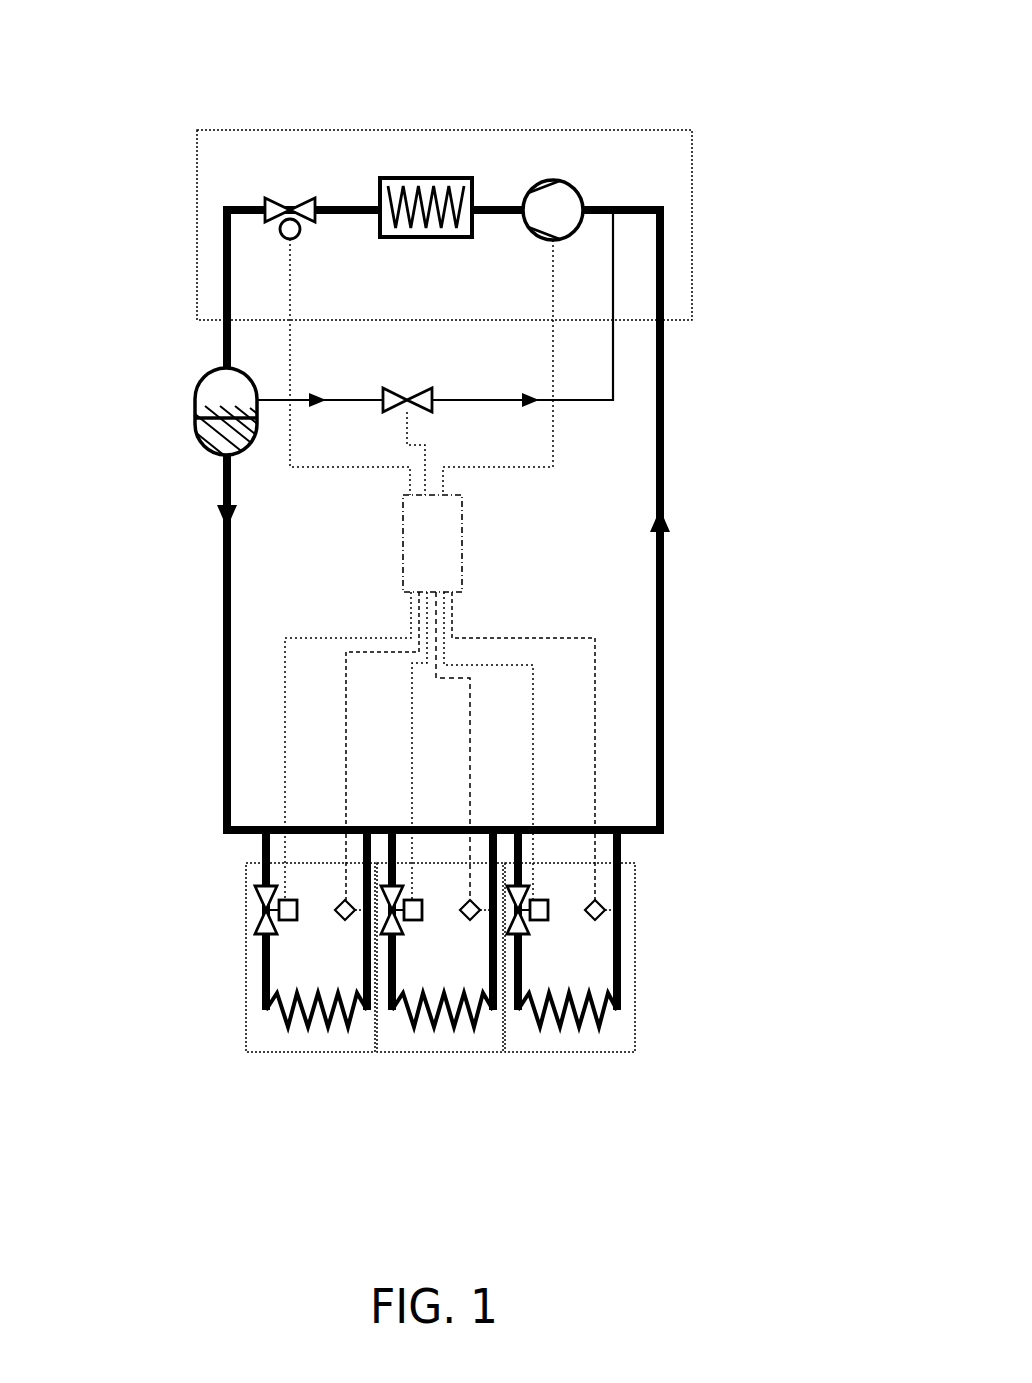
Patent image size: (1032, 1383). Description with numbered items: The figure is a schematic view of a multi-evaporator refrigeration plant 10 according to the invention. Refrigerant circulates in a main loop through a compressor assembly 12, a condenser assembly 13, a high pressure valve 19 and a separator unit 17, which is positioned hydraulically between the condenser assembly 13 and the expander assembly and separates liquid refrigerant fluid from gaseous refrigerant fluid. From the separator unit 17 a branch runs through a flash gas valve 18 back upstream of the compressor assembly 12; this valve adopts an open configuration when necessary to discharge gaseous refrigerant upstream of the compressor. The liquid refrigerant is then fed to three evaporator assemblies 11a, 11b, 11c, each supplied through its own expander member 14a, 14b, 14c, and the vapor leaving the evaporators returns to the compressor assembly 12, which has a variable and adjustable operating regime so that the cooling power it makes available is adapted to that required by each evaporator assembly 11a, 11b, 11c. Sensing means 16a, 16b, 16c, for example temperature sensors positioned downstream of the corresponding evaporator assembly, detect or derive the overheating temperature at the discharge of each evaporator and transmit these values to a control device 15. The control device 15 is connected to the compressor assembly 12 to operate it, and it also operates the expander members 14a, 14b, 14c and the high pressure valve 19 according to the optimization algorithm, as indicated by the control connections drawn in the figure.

The refrigeration plant 10 is at (727, 122).
The evaporator assembly 11a is at (290, 1040).
The evaporator assembly 11b is at (433, 1040).
The evaporator assembly 11c is at (583, 1040).
The compressor assembly 12 is at (569, 177).
The condenser assembly 13 is at (426, 176).
The expander member 14a is at (253, 926).
The expander member 14b is at (408, 932).
The expander member 14c is at (532, 933).
The control device 15 is at (470, 538).
The sensing means 16a is at (335, 920).
The sensing means 16b is at (473, 918).
The sensing means 16c is at (602, 920).
The separator unit 17 is at (181, 419).
The flash gas valve 18 is at (407, 385).
The high pressure valve 19 is at (285, 188).